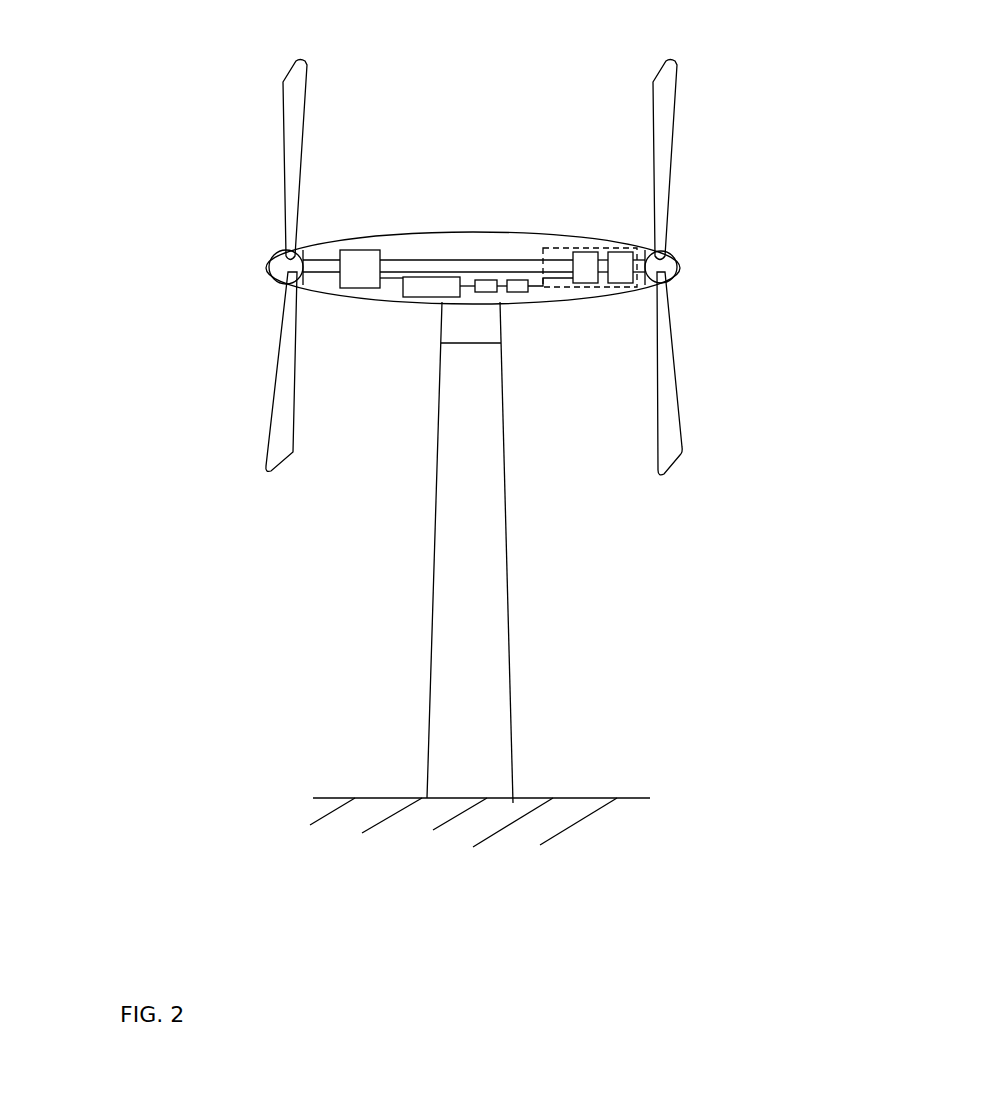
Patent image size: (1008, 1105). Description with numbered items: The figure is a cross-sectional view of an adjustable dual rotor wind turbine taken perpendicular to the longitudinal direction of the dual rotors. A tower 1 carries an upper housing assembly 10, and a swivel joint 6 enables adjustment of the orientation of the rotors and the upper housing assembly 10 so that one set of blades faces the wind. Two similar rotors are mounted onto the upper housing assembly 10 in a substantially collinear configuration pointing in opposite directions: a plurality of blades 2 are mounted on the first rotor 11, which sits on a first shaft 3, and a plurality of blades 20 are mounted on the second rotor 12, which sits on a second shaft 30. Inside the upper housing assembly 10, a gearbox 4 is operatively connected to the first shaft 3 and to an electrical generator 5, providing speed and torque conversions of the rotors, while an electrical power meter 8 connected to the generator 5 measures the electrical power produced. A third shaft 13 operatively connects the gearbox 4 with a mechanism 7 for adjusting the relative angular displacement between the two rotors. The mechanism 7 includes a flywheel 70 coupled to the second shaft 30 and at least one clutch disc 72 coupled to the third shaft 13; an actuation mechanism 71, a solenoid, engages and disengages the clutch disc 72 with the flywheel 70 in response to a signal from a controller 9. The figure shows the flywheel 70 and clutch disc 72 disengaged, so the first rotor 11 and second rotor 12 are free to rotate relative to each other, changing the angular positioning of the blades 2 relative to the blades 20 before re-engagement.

The tower 1 is at (470, 533).
The blades 2 is at (298, 103).
The first shaft 3 is at (325, 266).
The gearbox 4 is at (362, 257).
The electrical generator 5 is at (432, 287).
The swivel joint 6 is at (463, 327).
The mechanism for adjusting the relative angular displacement between the two rotors 7 is at (545, 254).
The electrical power meter 8 is at (482, 293).
The controller 9 is at (517, 293).
The upper housing assembly 10 is at (470, 227).
The first rotor 11 is at (277, 262).
The second rotor 12 is at (668, 273).
The third shaft 13 is at (439, 262).
The blades 20 is at (667, 100).
The second shaft 30 is at (663, 260).
The flywheel 70 is at (622, 283).
The actuation mechanism (solenoid) 71 is at (563, 299).
The clutch disc 72 is at (583, 283).